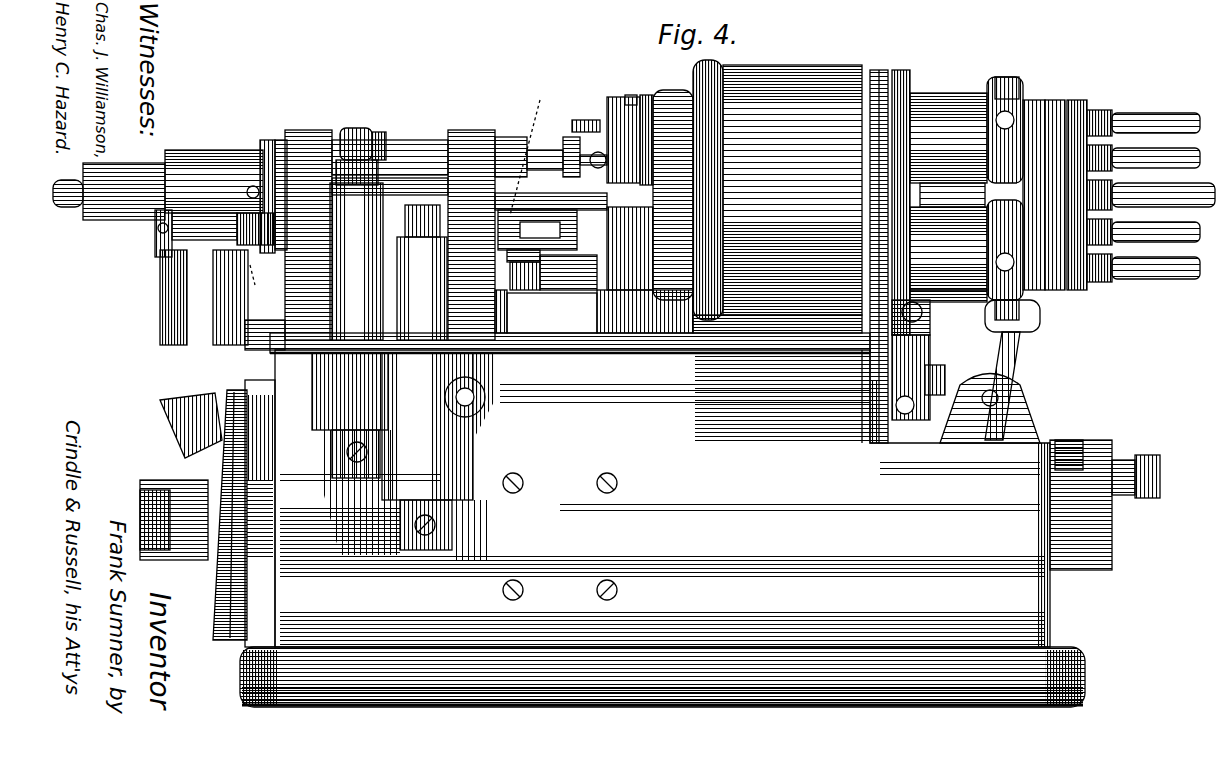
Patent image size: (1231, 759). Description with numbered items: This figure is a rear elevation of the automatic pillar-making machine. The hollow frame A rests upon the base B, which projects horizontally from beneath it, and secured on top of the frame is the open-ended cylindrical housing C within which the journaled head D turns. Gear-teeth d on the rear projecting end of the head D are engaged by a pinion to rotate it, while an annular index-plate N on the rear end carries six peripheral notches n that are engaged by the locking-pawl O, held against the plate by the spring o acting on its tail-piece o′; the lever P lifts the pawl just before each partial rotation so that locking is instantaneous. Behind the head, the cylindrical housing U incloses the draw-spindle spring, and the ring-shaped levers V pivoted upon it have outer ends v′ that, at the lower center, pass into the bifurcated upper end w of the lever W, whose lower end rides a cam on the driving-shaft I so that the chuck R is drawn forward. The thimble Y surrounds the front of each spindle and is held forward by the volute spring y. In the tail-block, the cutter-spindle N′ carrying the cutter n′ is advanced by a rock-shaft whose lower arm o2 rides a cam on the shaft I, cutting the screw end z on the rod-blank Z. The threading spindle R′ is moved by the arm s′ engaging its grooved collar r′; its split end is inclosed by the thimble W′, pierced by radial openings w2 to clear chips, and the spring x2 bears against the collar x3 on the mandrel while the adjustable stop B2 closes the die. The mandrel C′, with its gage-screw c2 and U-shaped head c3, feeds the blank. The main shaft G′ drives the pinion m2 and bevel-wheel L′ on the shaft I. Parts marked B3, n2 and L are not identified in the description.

The hollow frame A is at (669, 498).
The base B is at (662, 690).
The adjustable stop B2 is at (222, 300).
The rail B3 is at (165, 252).
The cylindrical housing C is at (781, 244).
The journaled head D is at (690, 88).
The gear-teeth d is at (879, 245).
The annular plate N is at (905, 88).
The cutter-spindle N′ is at (410, 158).
The peripheral notches n is at (940, 184).
The cutter n′ is at (551, 194).
The knob n2 is at (378, 137).
The cylindrical housing U is at (948, 189).
The ring-shaped lever V is at (968, 322).
The outer end of lever v′ is at (1038, 305).
The bifurcated upper end w is at (1032, 320).
The lever W is at (990, 387).
The thimble W′ is at (515, 140).
The main shaft G′ is at (532, 148).
The chuck R is at (598, 150).
The threading spindle R′ is at (416, 210).
The screw end z is at (577, 122).
The thimble Y is at (570, 217).
The volute spring y is at (630, 95).
The rod-blank Z is at (594, 311).
The spring o is at (904, 383).
The tail-piece o′ is at (905, 332).
The lower radial arm o2 is at (356, 135).
The locking-pawl O is at (922, 312).
The lever P is at (940, 378).
The driving-shaft I is at (1122, 508).
The spring x2 is at (308, 235).
The collar x3 is at (253, 280).
The grooved collar r′ is at (356, 250).
The upper radial arm s′ is at (422, 262).
The radial openings w2 is at (537, 229).
The mandrel C′ is at (525, 270).
The gage-screw c2 is at (540, 285).
The U-shaped head c3 is at (575, 290).
The shaft L is at (165, 520).
The bevel-wheel L′ is at (212, 580).
The pinion m2 is at (181, 425).